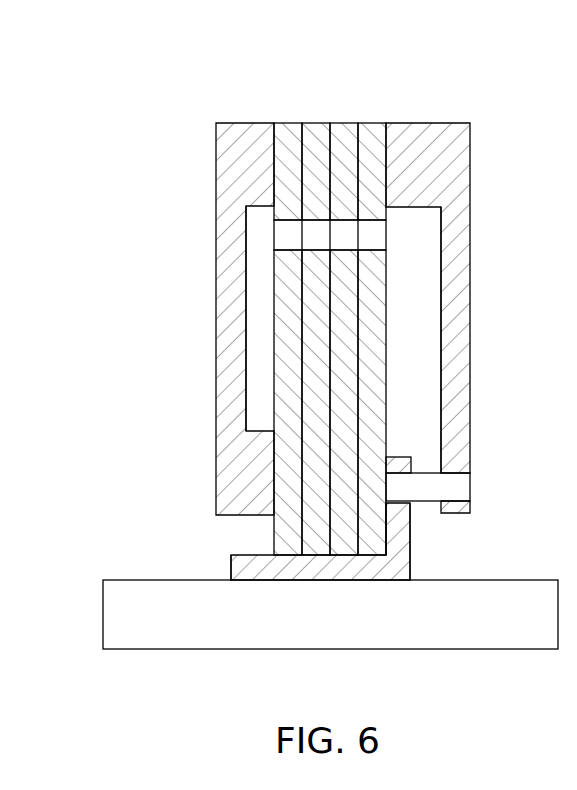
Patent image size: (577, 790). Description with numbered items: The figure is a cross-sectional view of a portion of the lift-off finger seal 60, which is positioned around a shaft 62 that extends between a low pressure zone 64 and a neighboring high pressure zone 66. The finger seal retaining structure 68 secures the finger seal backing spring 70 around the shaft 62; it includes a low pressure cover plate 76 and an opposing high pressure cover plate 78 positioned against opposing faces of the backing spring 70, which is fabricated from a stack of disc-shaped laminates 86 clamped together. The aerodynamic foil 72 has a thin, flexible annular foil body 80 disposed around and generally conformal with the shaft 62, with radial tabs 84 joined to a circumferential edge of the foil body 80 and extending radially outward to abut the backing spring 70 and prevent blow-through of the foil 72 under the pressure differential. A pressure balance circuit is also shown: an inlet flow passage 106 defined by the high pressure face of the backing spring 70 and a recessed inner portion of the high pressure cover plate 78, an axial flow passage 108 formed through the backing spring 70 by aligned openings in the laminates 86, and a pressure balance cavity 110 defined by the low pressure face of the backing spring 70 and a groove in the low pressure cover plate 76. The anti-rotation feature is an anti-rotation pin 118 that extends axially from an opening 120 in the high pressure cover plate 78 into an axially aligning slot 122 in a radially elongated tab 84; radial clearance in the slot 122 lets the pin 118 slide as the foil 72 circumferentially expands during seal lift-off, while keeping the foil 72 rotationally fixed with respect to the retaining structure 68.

The lift-off finger seal 60 is at (324, 361).
The shaft 62 is at (330, 650).
The low pressure zone 64 is at (191, 279).
The high pressure zone 66 is at (545, 280).
The finger seal retaining structure 68 is at (469, 279).
The finger seal backing spring 70 is at (294, 292).
The aerodynamic foil 72 is at (192, 597).
The low pressure cover plate 76 is at (216, 158).
The high pressure cover plate 78 is at (460, 153).
The annular foil body 80 is at (268, 580).
The radial tabs 84 is at (410, 557).
The laminates 86 is at (284, 123).
The inlet flow passage 106 is at (428, 303).
The axial flow passage 108 is at (284, 237).
The pressure balance cavity 110 is at (258, 395).
The anti-rotation pin 118 is at (428, 476).
The opening 120 is at (470, 500).
The slot 122 is at (410, 518).